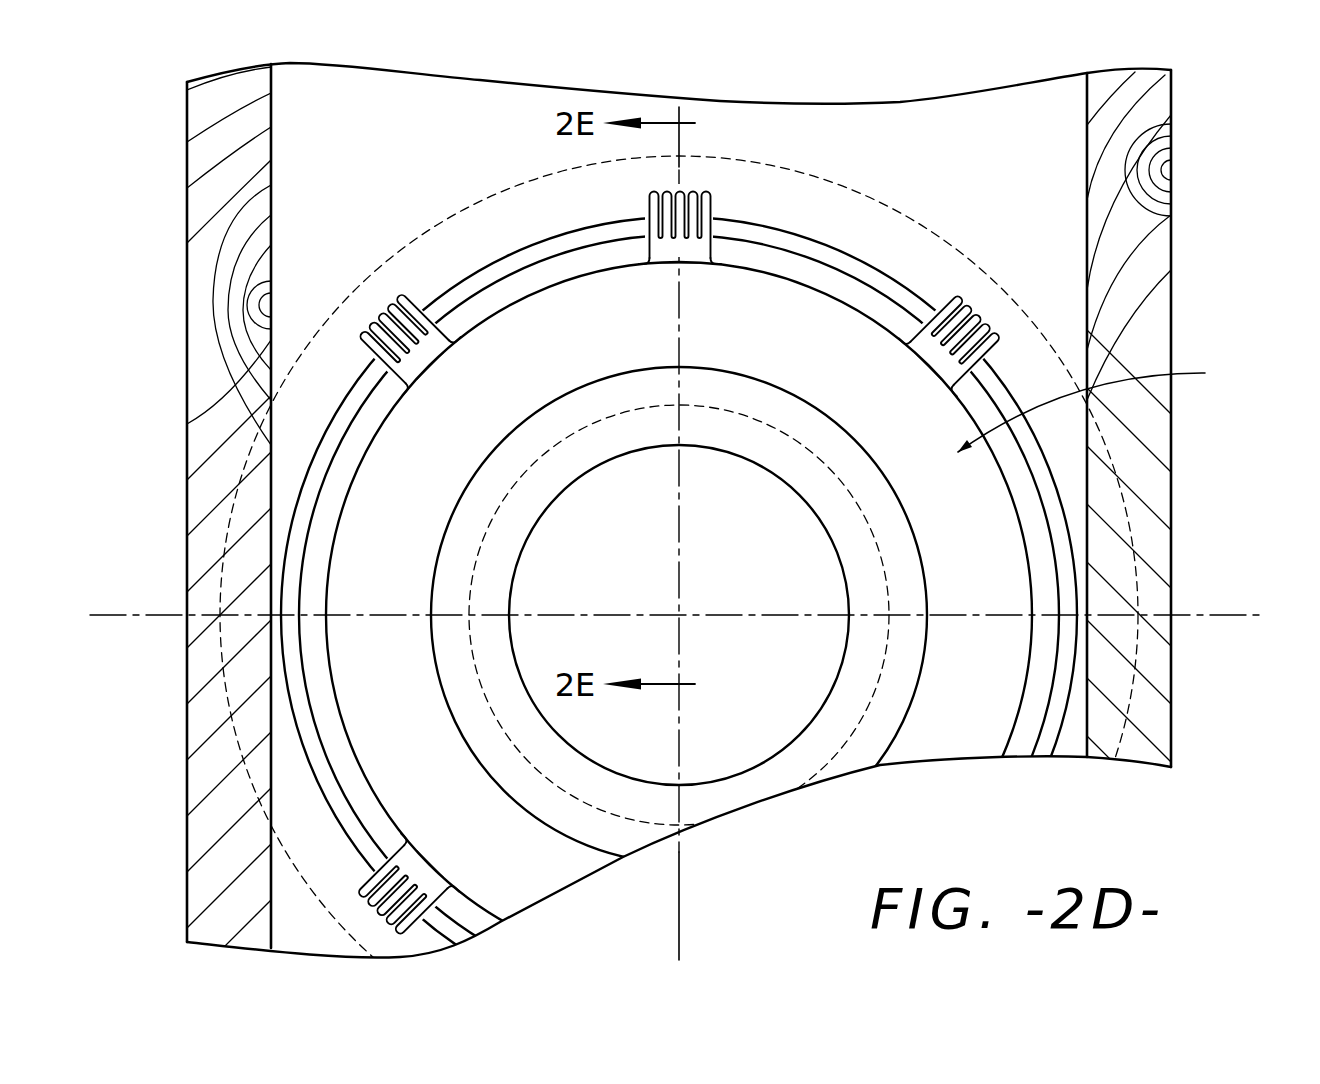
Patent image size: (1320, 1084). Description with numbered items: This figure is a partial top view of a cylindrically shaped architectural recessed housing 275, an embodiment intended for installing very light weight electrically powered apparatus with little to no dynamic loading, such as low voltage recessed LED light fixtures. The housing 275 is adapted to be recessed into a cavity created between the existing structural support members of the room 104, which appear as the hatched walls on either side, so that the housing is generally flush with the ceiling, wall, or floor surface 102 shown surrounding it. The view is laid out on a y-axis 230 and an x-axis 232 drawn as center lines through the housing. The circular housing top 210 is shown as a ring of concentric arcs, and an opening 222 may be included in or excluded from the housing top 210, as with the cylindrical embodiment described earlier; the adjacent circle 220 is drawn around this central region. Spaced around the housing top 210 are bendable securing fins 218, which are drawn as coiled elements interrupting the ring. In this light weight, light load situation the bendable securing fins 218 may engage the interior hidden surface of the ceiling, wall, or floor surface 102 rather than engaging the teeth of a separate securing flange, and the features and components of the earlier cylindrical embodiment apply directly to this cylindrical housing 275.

The ceiling, wall, or floor surface 102 is at (890, 102).
The structural support members of the room 104 is at (202, 306).
The housing top 210 is at (806, 318).
The bendable securing fins 218 is at (710, 207).
The outer circle of rotor 220 is at (600, 402).
The opening 222 is at (800, 553).
The y-axis 230 is at (681, 860).
The x-axis 232 is at (1210, 613).
The cylindrical housing 275 is at (1110, 410).